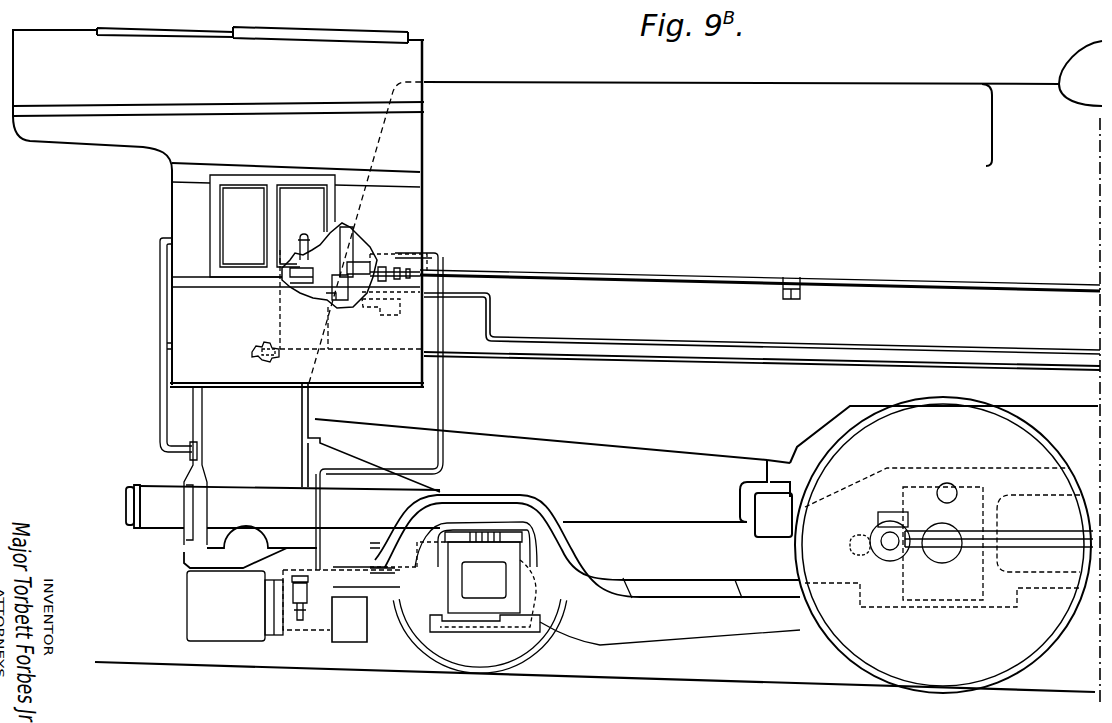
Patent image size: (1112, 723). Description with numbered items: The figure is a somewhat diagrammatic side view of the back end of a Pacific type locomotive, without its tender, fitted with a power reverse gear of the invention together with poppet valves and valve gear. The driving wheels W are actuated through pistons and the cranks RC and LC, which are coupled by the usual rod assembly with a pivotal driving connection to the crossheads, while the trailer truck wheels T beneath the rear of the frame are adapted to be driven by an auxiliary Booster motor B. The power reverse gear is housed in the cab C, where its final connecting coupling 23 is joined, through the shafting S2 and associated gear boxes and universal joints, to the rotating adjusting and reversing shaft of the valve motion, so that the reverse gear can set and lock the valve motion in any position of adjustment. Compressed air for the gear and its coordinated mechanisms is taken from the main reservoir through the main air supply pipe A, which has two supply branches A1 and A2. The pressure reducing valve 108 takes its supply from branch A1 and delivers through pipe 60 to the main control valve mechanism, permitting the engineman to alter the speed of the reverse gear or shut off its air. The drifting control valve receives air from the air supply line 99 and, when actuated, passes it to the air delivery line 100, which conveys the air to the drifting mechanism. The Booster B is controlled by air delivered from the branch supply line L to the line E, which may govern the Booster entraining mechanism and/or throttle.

The pipe 60 is at (293, 238).
The connecting coupling 23 is at (386, 262).
The branch supply line L is at (322, 295).
The air supply line 99 is at (333, 303).
The supply branch A2 is at (330, 340).
The supply branch A1 is at (280, 352).
The pressure reducing valve 108 is at (252, 350).
The cab C is at (208, 335).
The line E is at (442, 388).
The air delivery line 100 is at (492, 312).
The shafting S2 is at (904, 277).
The main air supply pipe A is at (720, 360).
The crank LC is at (947, 482).
The crank RC is at (880, 530).
The driving wheels W is at (943, 545).
The trailer truck wheels T is at (468, 602).
The Booster motor B is at (316, 628).